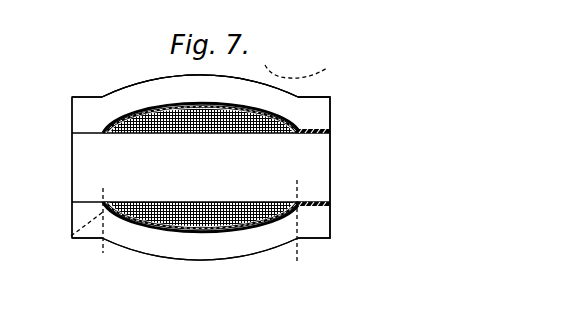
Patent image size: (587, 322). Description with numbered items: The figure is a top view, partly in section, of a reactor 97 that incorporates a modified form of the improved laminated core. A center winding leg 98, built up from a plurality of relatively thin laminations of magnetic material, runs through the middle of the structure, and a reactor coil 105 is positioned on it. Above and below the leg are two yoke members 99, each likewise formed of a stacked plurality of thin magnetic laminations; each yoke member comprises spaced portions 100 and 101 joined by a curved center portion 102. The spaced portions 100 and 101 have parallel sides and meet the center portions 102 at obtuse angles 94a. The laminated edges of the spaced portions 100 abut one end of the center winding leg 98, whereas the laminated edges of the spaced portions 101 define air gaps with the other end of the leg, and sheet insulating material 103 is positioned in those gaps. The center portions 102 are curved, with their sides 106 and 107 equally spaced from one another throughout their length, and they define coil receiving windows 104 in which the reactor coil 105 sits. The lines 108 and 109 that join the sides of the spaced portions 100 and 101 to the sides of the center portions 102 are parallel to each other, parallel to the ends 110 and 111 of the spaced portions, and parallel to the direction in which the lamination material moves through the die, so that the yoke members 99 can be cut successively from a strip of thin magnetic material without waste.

The obtuse angles 94a is at (310, 69).
The reactor 97 is at (306, 97).
The center winding leg 98 is at (83, 175).
The yoke members 99 is at (144, 74).
The spaced portions 100 is at (83, 118).
The spaced portions 101 is at (318, 109).
The center portions 102 is at (230, 88).
The sheet insulating material 103 is at (331, 135).
The coil receiving windows 104 is at (122, 116).
The reactor coil 105 is at (233, 207).
The sides 106 is at (175, 77).
The sides 107 is at (133, 113).
The lines 108 is at (71, 236).
The lines 109 is at (298, 212).
The ends 110 is at (72, 126).
The ends 111 is at (333, 128).